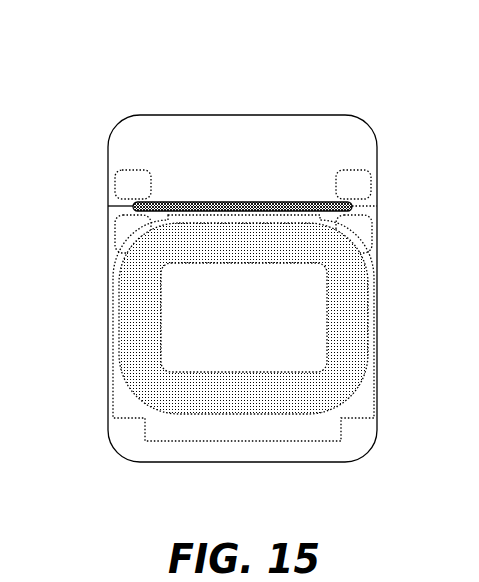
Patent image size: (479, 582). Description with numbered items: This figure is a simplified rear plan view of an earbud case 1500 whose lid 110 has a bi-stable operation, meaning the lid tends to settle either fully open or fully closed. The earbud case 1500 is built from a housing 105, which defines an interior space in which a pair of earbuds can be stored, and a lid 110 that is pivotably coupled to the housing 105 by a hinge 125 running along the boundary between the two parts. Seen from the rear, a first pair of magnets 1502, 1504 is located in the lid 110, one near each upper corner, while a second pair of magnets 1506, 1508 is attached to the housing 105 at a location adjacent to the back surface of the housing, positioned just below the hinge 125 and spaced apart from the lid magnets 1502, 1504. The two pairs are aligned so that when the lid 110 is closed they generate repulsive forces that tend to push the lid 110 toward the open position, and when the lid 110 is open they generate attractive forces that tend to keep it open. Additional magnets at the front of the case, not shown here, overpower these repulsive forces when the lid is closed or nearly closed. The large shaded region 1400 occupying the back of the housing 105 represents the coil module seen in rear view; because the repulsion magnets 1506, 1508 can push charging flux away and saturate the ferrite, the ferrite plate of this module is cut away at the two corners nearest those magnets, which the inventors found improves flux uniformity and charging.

The earbud case 1500 is at (222, 68).
The lid 110 is at (367, 118).
The housing 105 is at (377, 352).
The hinge 125 is at (263, 202).
The pad 1400 is at (138, 325).
The magnet 1502 is at (118, 180).
The magnet 1504 is at (368, 178).
The magnet 1506 is at (118, 243).
The magnet 1508 is at (372, 243).